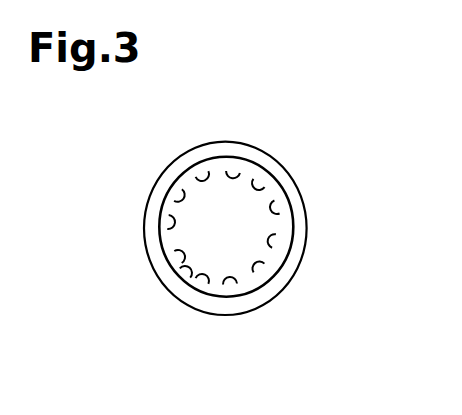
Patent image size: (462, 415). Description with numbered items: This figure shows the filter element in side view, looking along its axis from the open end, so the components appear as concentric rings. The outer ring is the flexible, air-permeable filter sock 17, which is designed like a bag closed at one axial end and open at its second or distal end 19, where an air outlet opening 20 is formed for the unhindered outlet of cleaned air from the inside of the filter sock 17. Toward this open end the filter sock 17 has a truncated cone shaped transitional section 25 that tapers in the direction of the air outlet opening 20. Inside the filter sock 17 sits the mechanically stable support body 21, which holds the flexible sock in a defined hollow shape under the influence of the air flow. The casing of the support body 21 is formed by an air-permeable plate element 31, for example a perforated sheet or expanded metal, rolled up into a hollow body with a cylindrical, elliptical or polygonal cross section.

The filter sock 17 is at (159, 172).
The transitional section 25 is at (247, 154).
The second or distal end 19 is at (283, 204).
The support body 21 is at (262, 244).
The air outlet opening 20 is at (190, 268).
The plate element 31 is at (192, 236).